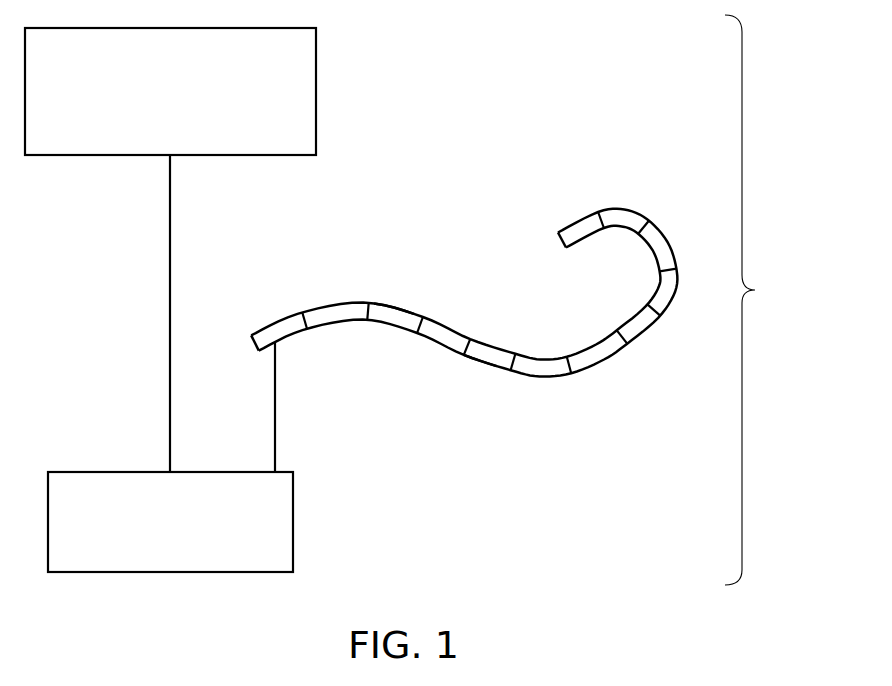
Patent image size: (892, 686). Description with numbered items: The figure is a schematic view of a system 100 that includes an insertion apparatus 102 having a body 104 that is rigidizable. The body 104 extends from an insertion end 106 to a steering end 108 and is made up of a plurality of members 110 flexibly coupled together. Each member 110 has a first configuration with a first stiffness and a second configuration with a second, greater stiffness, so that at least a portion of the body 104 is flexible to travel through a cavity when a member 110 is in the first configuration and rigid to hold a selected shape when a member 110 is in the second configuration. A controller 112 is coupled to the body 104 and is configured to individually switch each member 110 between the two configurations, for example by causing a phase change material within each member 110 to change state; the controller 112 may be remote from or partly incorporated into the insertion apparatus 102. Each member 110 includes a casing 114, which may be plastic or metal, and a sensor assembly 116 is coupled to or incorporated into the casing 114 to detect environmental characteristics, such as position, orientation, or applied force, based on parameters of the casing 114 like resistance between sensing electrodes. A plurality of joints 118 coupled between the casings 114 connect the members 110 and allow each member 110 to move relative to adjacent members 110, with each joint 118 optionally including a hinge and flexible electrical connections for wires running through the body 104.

The system 100 is at (755, 288).
The insertion apparatus 102 is at (606, 186).
The body 104 is at (480, 362).
The insertion end 106 is at (558, 237).
The steering end 108 is at (253, 340).
The member 110 is at (622, 338).
The controller 112 is at (316, 90).
The casing 114 is at (400, 303).
The sensor assembly 116 is at (295, 520).
The joint 118 is at (653, 312).